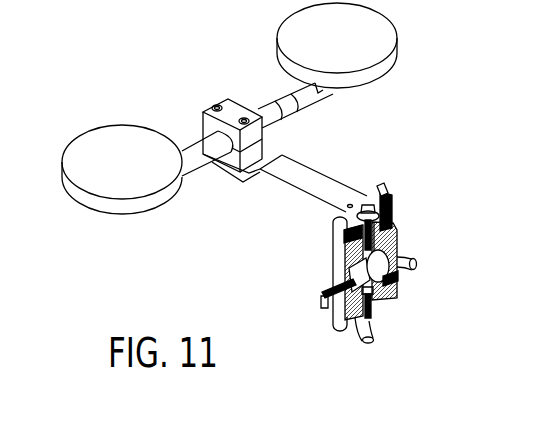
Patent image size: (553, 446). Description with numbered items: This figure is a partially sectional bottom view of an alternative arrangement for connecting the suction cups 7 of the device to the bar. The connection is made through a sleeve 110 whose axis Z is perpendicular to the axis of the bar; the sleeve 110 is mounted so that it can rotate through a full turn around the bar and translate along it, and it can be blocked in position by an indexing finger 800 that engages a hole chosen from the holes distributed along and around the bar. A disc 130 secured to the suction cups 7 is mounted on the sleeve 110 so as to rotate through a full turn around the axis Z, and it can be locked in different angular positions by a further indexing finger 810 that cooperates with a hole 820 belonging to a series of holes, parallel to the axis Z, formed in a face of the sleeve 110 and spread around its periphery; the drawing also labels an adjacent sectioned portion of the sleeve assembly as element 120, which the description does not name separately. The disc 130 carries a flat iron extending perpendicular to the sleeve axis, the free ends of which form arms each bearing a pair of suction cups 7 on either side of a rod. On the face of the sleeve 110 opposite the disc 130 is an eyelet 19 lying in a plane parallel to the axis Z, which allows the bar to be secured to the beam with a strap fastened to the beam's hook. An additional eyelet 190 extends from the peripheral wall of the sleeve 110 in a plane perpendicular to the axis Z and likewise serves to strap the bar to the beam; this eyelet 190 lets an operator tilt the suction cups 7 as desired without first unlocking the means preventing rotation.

The suction cups 7 is at (388, 62).
The eyelet 19 is at (372, 335).
The sleeve 110 is at (331, 262).
The clamp body 120 is at (397, 248).
The disc 130 is at (347, 222).
The additional eyelet 190 is at (417, 267).
The indexing finger 800 is at (325, 312).
The indexing finger 810 is at (382, 182).
The hole 820 is at (393, 226).